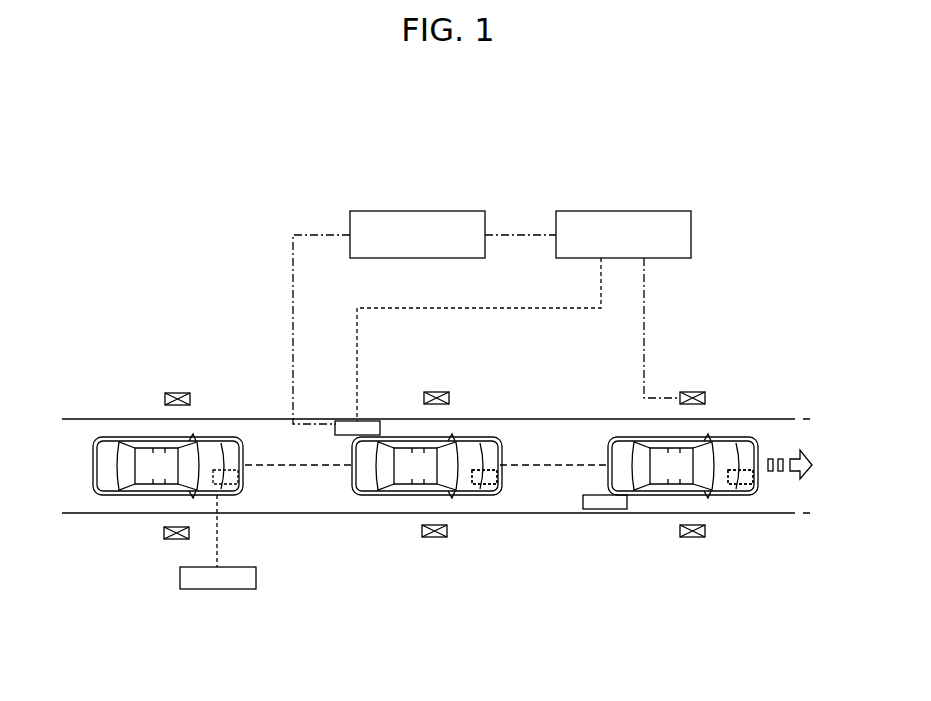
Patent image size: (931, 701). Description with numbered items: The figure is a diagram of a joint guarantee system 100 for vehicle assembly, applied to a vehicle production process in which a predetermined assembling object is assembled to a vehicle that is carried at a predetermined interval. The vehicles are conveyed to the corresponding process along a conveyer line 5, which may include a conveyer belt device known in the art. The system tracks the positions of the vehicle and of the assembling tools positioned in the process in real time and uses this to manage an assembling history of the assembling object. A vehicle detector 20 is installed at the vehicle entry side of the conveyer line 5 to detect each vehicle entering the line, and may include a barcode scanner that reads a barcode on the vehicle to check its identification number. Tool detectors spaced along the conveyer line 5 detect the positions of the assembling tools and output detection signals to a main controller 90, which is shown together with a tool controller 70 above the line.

The joint guarantee system 100 is at (473, 114).
The conveyer line 5 is at (537, 513).
The vehicle detector 20 is at (219, 590).
The tool controller 70 is at (418, 211).
The main controller 90 is at (622, 211).